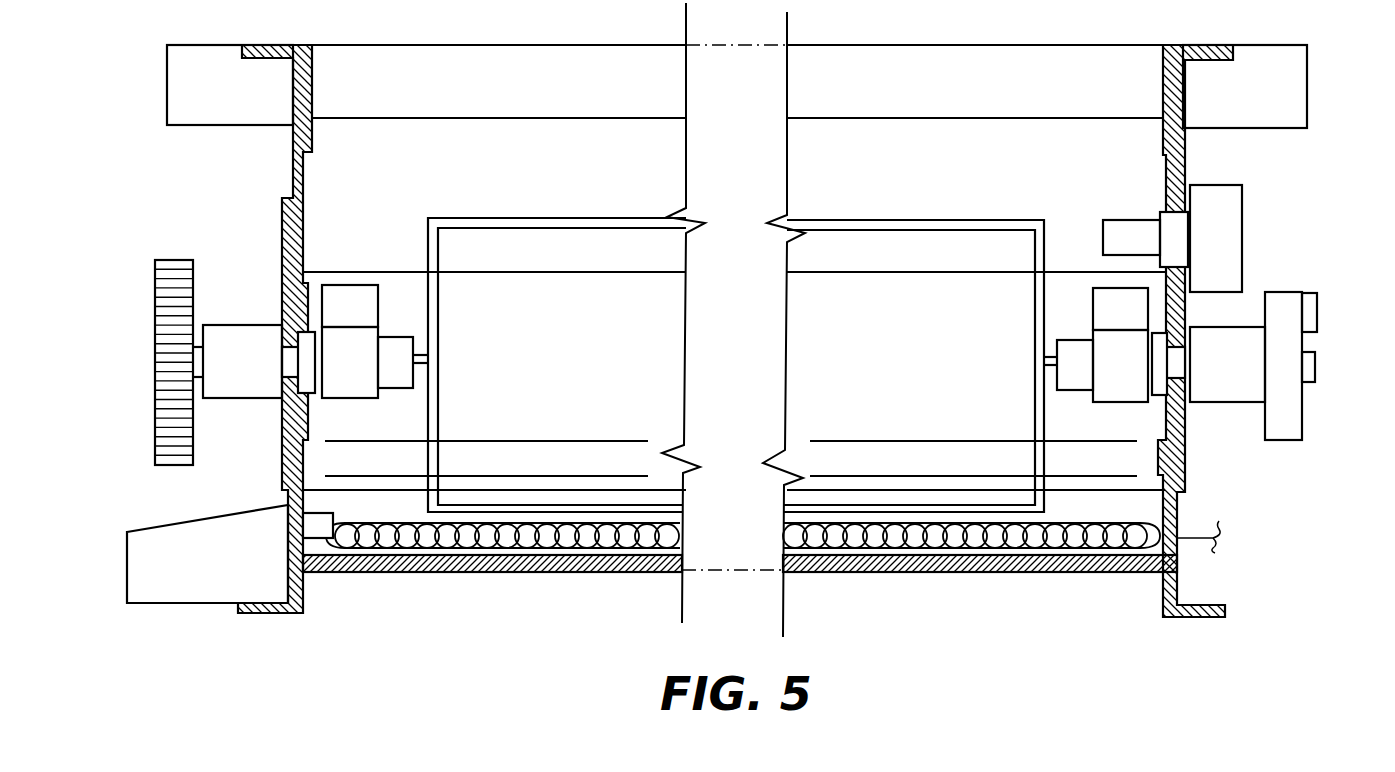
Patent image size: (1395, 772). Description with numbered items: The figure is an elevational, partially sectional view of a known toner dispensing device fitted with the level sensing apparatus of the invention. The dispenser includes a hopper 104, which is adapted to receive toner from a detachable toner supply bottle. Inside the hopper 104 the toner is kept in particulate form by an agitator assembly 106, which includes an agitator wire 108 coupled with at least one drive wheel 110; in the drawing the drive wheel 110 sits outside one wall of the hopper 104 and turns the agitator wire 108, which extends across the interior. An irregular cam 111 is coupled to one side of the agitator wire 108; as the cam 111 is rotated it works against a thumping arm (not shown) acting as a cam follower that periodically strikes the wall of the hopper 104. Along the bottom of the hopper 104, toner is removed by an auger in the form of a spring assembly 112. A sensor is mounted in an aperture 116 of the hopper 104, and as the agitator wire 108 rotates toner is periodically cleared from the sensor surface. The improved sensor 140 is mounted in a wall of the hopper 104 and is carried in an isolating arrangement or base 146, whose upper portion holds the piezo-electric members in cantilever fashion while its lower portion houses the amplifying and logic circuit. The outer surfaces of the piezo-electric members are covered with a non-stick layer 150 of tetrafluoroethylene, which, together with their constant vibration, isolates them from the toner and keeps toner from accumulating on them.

The hopper 104 is at (1194, 472).
The agitator assembly 106 is at (903, 203).
The agitator wire 108 is at (550, 218).
The drive wheel 110 is at (155, 300).
The irregular cam 111 is at (1305, 338).
The spring assembly 112 is at (1030, 573).
The aperture 116 is at (1167, 210).
The sensor 140 is at (1260, 195).
The base 146 is at (1242, 248).
The non-stick layer 150 is at (1103, 238).